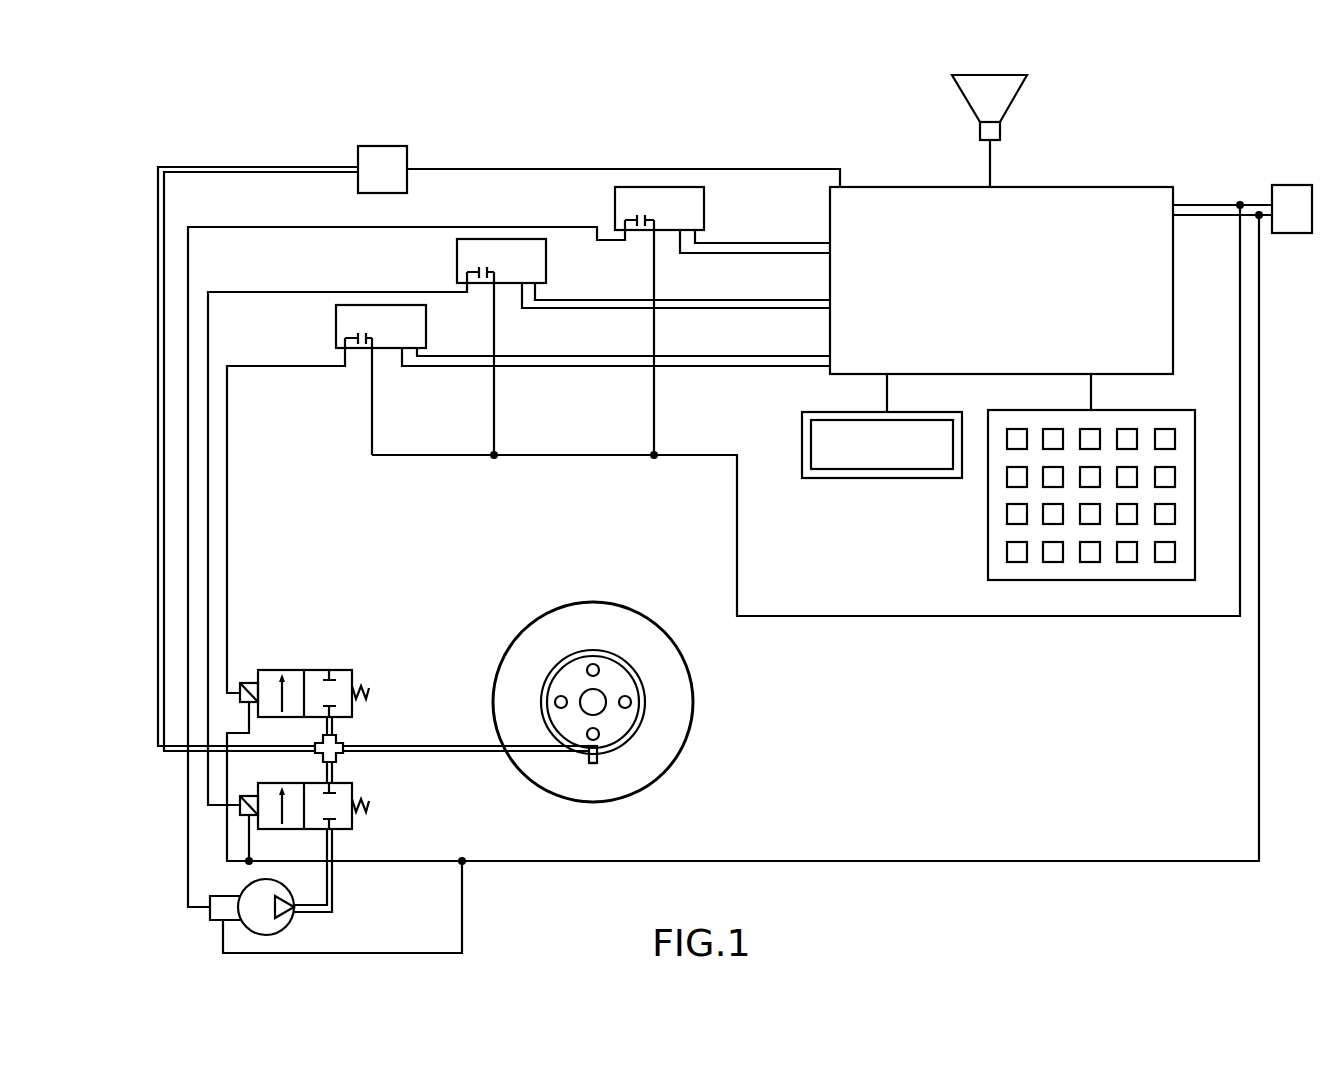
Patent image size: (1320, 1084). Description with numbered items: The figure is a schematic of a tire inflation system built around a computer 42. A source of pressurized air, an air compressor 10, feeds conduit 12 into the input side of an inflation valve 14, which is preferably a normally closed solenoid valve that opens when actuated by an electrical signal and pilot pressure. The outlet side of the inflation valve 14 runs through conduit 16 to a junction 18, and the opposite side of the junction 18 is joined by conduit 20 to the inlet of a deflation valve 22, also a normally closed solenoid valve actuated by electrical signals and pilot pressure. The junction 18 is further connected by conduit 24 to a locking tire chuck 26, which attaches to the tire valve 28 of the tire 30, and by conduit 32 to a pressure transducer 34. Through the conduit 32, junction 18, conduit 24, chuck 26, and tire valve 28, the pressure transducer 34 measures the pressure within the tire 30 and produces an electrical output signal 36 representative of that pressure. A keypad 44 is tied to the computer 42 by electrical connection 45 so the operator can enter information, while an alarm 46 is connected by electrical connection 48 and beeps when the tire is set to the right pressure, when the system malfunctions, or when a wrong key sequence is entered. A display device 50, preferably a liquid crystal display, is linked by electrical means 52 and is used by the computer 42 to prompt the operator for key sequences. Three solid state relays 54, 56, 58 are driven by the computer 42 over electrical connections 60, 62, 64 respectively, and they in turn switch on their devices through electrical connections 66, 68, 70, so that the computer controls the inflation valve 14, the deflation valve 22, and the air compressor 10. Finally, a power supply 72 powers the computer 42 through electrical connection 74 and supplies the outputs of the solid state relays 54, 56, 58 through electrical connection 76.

The air compressor 10 is at (293, 920).
The conduit 12 is at (335, 880).
The inflation valve 14 is at (358, 818).
The conduit 16 is at (327, 772).
The junction 18 is at (337, 756).
The conduit 20 is at (334, 723).
The deflation valve 22 is at (356, 672).
The conduit 24 is at (415, 746).
The locking tire chuck 26 is at (598, 755).
The tire valve 28 is at (598, 762).
The tire 30 is at (692, 700).
The conduit 32 is at (240, 167).
The pressure transducer 34 is at (385, 146).
The electrical output signal 36 is at (465, 169).
The computer 42 is at (1065, 187).
The keypad 44 is at (1195, 470).
The electrical connection 45 is at (1091, 392).
The alarm 46 is at (1019, 89).
The electrical connection 48 is at (990, 165).
The display device 50 is at (802, 440).
The electrical means 52 is at (887, 392).
The solid state relay 54 is at (500, 239).
The solid state relay 56 is at (378, 305).
The solid state relay 58 is at (663, 187).
The electrical connection 60 is at (590, 300).
The electrical connection 62 is at (440, 356).
The electrical connection 64 is at (750, 243).
The electrical connection 66 is at (262, 366).
The electrical connection 68 is at (262, 292).
The electrical connection 70 is at (265, 227).
The power supply 72 is at (1290, 185).
The electrical connection 74 is at (1195, 205).
The electrical connection 76 is at (700, 454).